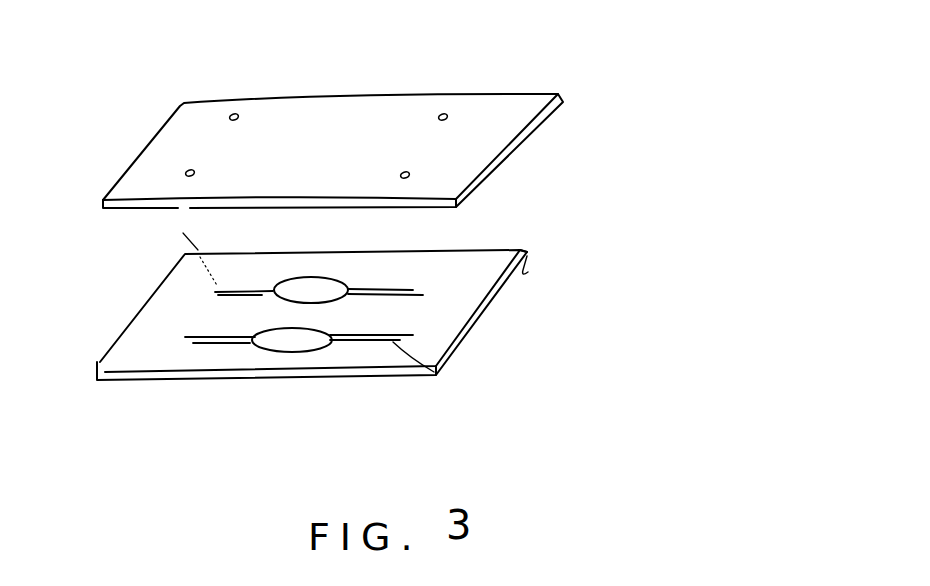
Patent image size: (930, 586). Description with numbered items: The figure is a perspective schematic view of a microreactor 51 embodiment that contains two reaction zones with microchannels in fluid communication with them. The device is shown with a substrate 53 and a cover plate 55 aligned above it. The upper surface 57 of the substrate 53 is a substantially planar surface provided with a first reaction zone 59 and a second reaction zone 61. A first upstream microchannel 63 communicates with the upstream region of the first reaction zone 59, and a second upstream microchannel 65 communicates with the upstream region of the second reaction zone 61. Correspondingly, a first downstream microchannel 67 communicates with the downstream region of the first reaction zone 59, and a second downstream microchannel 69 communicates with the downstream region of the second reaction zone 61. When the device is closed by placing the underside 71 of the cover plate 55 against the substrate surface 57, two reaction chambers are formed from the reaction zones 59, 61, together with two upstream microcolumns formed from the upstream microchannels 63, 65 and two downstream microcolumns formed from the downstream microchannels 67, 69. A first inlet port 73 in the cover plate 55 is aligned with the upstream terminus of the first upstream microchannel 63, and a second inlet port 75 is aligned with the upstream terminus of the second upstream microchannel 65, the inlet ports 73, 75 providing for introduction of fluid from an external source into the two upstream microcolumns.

The microreactor 51 is at (651, 60).
The substrate 53 is at (371, 327).
The cover plate 55 is at (517, 155).
The upper surface 57 is at (445, 317).
The first reaction zone 59 is at (288, 342).
The second reaction zone 61 is at (323, 290).
The first upstream microchannel 63 is at (215, 343).
The second upstream microchannel 65 is at (237, 292).
The first downstream microchannel 67 is at (442, 380).
The second downstream microchannel 69 is at (407, 288).
The underside 71 is at (498, 173).
The first inlet port 73 is at (187, 173).
The second inlet port 75 is at (236, 114).